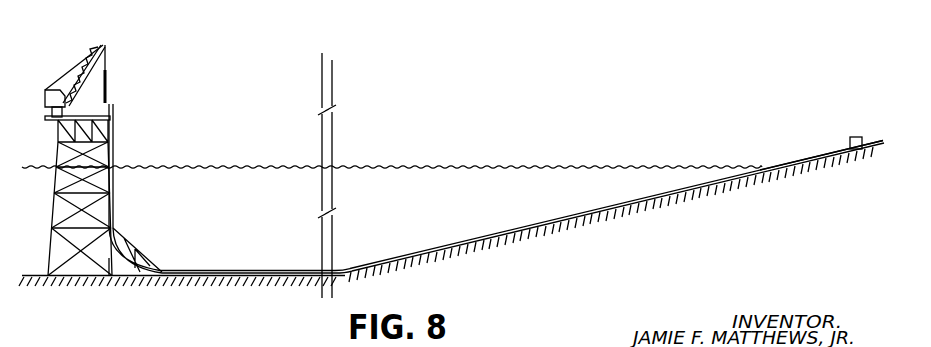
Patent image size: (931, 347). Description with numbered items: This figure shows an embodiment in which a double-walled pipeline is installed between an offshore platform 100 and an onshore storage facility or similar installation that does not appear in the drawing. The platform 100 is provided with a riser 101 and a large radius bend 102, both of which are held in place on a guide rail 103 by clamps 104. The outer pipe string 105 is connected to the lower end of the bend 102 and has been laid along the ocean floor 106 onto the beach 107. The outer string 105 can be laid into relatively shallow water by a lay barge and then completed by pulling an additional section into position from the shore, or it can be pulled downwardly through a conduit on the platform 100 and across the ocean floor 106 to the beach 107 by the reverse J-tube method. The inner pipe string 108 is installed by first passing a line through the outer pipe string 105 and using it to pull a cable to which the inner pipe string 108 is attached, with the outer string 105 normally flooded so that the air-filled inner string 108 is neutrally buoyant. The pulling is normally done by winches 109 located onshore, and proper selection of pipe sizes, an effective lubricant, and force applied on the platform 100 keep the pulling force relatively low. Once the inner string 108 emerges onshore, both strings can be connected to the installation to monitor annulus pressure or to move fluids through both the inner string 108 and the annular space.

The offshore platform 100 is at (54, 220).
The riser 101 is at (114, 174).
The large radius bend 102 is at (129, 262).
The guide rail 103 is at (110, 258).
The clamps 104 is at (114, 205).
The outer pipe string 105 is at (217, 270).
The ocean floor 106 is at (499, 246).
The beach 107 is at (816, 167).
The inner pipe string 108 is at (104, 112).
The winches 109 is at (857, 137).